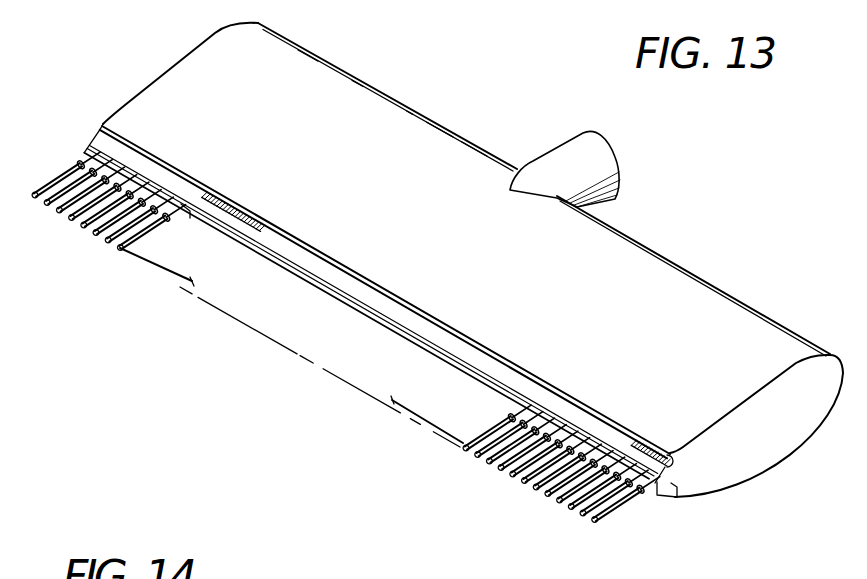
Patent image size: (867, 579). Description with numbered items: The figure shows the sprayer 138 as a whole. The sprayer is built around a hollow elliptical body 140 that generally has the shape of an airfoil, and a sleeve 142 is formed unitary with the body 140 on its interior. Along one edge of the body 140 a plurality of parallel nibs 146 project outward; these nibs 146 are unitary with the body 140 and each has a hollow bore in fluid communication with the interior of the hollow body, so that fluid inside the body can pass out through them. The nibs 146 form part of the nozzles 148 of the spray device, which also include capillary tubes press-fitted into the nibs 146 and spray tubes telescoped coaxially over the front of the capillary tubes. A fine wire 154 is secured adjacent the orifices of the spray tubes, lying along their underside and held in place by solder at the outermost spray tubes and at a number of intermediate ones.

The sprayer 138 is at (668, 252).
The hollow elliptical body 140 is at (730, 293).
The sleeve 142 is at (568, 152).
The nibs 146 is at (650, 485).
The nozzles 148 is at (627, 497).
The fine wire 154 is at (393, 400).